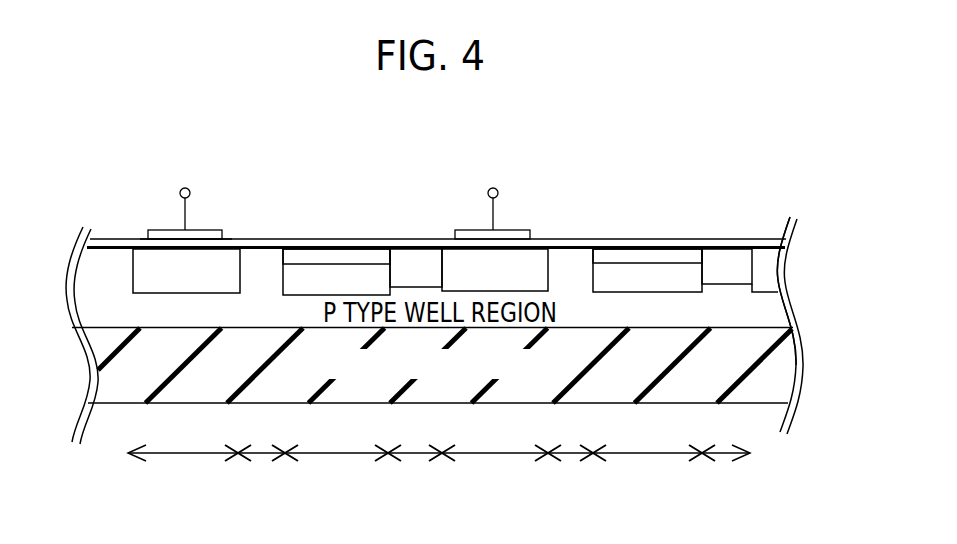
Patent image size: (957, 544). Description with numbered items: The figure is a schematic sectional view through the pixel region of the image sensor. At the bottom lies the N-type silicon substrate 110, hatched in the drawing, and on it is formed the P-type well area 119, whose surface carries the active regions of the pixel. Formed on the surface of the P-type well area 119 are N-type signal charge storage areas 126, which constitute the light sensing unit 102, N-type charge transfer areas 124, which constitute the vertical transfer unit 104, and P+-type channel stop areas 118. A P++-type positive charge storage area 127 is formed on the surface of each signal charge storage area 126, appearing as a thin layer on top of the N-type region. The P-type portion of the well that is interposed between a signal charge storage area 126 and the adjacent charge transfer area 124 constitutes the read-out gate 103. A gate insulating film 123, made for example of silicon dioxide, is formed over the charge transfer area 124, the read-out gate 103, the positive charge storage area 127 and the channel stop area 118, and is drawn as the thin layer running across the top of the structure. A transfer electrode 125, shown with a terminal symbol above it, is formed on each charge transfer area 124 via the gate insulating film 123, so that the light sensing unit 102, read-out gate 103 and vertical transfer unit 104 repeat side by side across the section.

The light sensing unit 102 is at (340, 455).
The read-out gate 103 is at (265, 258).
The vertical transfer unit 104 is at (182, 455).
The N-type silicon substrate 110 is at (764, 374).
The channel stop area 118 is at (428, 255).
The P-type well area 119 is at (767, 310).
The gate insulating film 123 is at (228, 240).
The charge transfer area 124 is at (148, 258).
The transfer electrode 125 is at (172, 232).
The signal charge storage area 126 is at (387, 272).
The positive charge storage area 127 is at (330, 252).